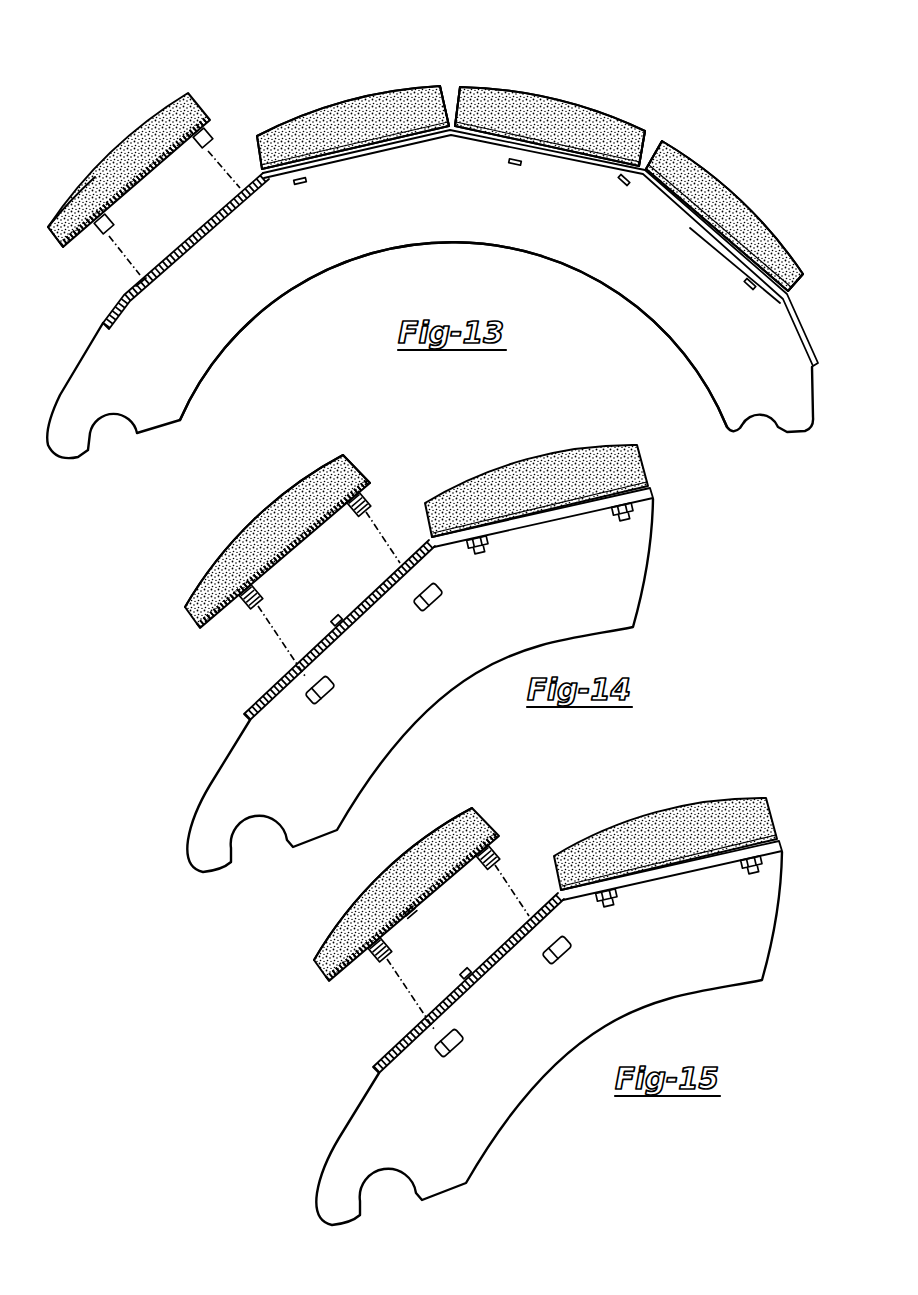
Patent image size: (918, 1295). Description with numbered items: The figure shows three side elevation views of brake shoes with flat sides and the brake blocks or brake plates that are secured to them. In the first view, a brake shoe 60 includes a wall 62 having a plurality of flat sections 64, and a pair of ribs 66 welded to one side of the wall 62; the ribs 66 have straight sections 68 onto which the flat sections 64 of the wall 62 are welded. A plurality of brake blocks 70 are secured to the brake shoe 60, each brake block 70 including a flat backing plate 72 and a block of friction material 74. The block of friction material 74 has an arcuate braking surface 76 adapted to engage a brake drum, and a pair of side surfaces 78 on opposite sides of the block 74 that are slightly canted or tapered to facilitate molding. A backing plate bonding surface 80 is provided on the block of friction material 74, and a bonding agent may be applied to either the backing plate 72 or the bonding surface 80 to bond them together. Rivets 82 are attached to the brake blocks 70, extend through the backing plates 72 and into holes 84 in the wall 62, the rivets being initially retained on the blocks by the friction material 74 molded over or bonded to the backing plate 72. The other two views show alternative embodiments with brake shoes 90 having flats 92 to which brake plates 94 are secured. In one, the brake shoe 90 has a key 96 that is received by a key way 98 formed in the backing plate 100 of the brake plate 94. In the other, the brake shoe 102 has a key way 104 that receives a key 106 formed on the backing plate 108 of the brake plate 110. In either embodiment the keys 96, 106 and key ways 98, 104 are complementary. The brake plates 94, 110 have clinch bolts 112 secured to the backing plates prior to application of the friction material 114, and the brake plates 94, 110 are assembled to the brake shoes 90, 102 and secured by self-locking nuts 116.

In FIG. 13, the brake shoe 60 is at (276, 358).
In FIG. 13, the wall 62 is at (103, 320).
In FIG. 13, the flat sections 64 is at (205, 240).
In FIG. 13, the ribs 66 is at (647, 307).
In FIG. 13, the straight sections 68 is at (714, 256).
In FIG. 13, the brake blocks 70 is at (150, 136).
In FIG. 13, the backing plate 72 is at (160, 170).
In FIG. 13, the block of friction material 74 is at (340, 118).
In FIG. 13, the arcuate braking surface 76 is at (540, 96).
In FIG. 13, the side surfaces 78 is at (450, 122).
In FIG. 13, the backing plate bonding surface 80 is at (118, 187).
In FIG. 13, the rivets 82 is at (100, 234).
In FIG. 13, the holes 84 is at (148, 292).
In FIG. 14, the brake shoe 90 is at (318, 847).
In FIG. 14, the flats 92 is at (328, 646).
In FIG. 15, the flats 92 is at (458, 999).
In FIG. 14, the brake plate 94 is at (220, 555).
In FIG. 14, the key 96 is at (343, 618).
In FIG. 14, the key way 98 is at (293, 551).
In FIG. 14, the backing plate 100 is at (368, 484).
In FIG. 15, the brake shoe 102 is at (492, 1147).
In FIG. 15, the key way 104 is at (475, 975).
In FIG. 15, the key 106 is at (414, 929).
In FIG. 15, the backing plate 108 is at (330, 984).
In FIG. 15, the brake plate 110 is at (441, 815).
In FIG. 14, the clinch bolts 112 is at (243, 617).
In FIG. 15, the clinch bolts 112 is at (371, 971).
In FIG. 14, the friction material 114 is at (185, 612).
In FIG. 15, the friction material 114 is at (312, 965).
In FIG. 14, the self-locking nuts 116 is at (334, 693).
In FIG. 15, the self-locking nuts 116 is at (470, 1045).